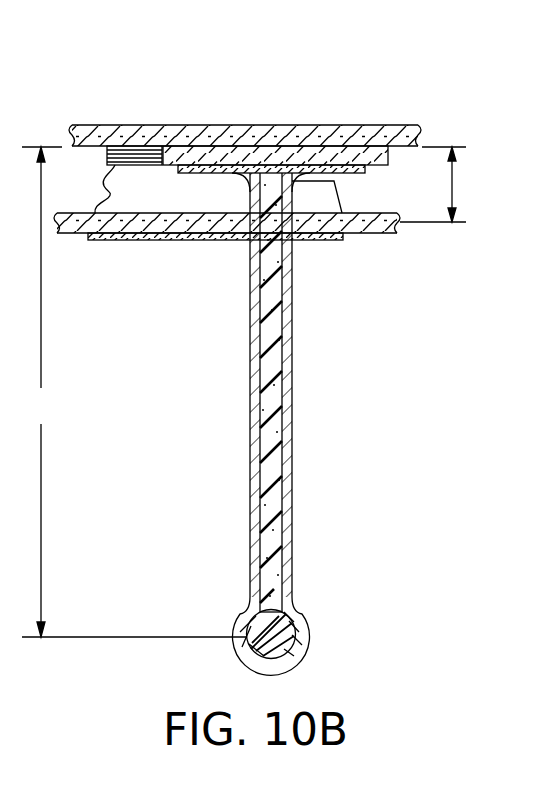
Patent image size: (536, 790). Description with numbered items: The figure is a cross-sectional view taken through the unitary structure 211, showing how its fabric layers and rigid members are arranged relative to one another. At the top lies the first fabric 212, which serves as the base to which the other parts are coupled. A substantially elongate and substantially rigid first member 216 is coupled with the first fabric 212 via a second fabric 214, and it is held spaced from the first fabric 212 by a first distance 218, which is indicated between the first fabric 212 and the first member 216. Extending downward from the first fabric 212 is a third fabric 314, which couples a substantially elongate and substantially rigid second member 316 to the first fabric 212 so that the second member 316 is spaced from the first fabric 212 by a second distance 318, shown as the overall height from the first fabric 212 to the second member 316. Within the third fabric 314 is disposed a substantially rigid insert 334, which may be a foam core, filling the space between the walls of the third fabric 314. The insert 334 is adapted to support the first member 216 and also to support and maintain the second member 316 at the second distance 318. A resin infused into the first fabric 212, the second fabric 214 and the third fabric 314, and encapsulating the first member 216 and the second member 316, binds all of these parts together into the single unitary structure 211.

The unitary structure 211 is at (345, 97).
The first fabric 212 is at (399, 146).
The second fabric 214 is at (148, 193).
The first member 216 is at (363, 233).
The first distance 218 is at (453, 184).
The third fabric 314 is at (292, 432).
The second member 316 is at (262, 637).
The second distance 318 is at (131, 392).
The insert 334 is at (277, 487).